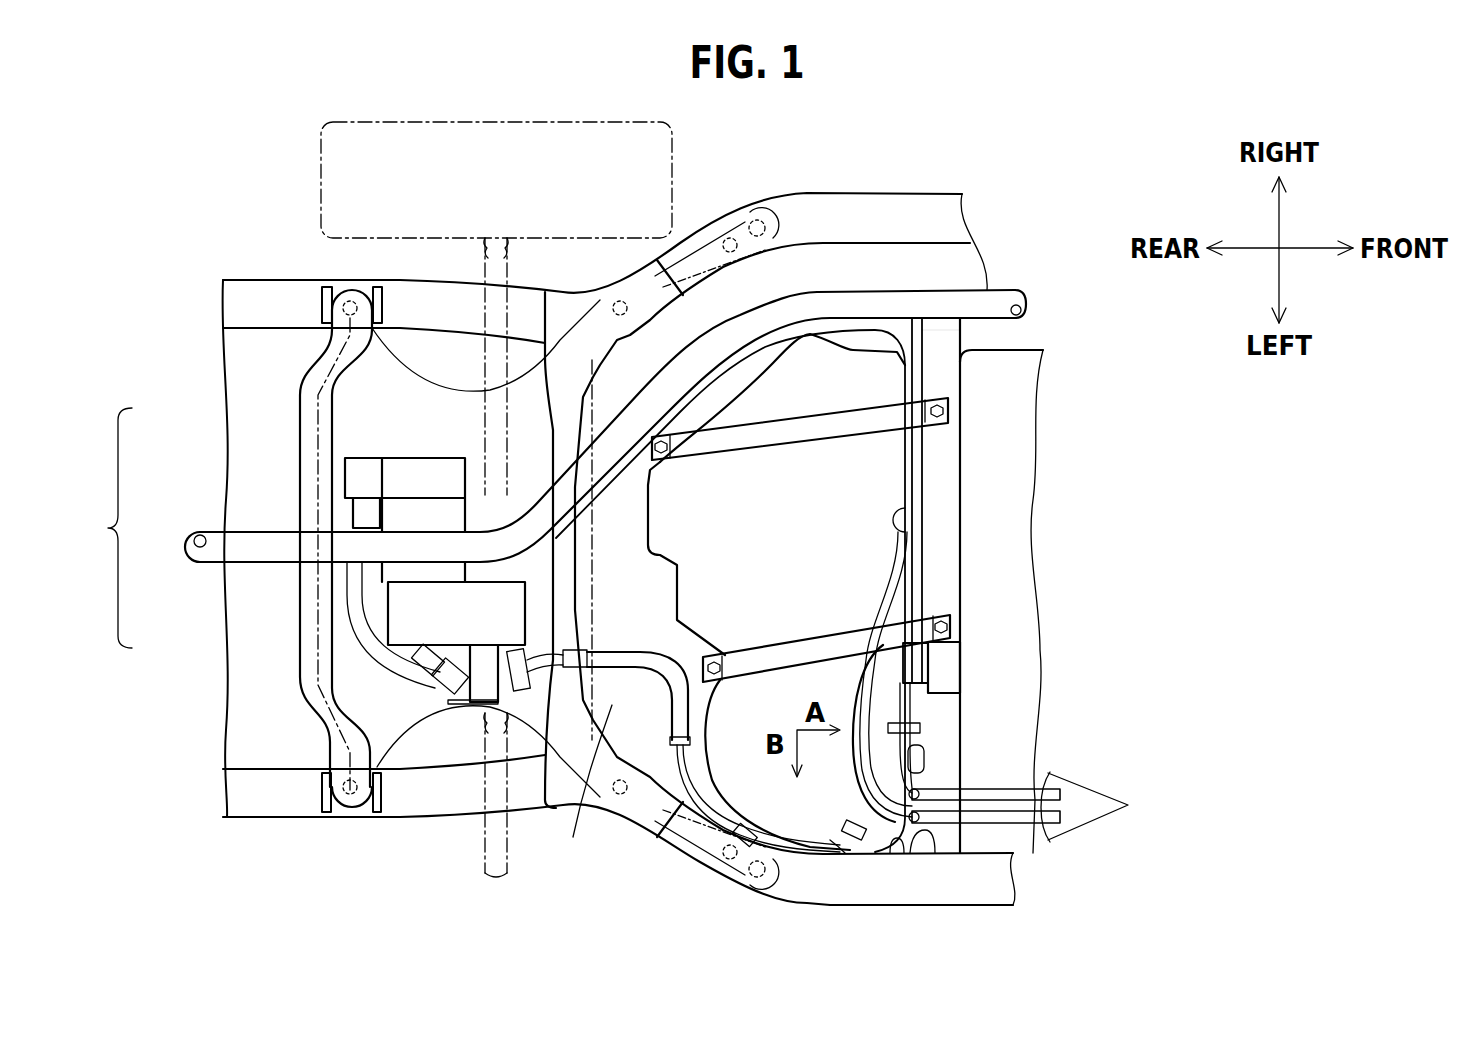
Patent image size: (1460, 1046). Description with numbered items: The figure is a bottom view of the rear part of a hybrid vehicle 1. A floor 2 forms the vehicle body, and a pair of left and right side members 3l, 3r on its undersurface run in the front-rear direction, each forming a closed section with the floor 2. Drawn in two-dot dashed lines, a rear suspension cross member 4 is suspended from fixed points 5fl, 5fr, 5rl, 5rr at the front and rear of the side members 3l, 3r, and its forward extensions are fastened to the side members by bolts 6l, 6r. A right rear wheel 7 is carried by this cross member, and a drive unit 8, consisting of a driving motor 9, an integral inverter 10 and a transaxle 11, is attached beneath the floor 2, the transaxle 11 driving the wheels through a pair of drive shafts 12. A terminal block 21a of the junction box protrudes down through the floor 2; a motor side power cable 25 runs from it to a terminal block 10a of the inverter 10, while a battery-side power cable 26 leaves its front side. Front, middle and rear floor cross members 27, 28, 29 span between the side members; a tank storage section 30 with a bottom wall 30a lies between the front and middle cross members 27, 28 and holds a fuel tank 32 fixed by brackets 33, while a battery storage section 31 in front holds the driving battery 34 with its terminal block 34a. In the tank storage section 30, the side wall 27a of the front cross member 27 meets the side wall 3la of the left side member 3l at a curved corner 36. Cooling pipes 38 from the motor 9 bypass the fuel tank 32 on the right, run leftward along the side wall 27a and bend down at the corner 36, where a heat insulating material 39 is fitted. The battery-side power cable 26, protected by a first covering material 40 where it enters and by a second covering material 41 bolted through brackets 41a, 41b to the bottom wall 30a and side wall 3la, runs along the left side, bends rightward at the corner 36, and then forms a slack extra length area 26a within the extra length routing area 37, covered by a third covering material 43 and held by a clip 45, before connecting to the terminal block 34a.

The hybrid vehicle 1 is at (968, 168).
The floor 2 is at (252, 746).
The right side member 3r is at (255, 300).
The left side member 3l is at (270, 810).
The side wall of the left side member 3la is at (835, 858).
The rear suspension cross member 4 is at (300, 642).
The rear right fixed point 5rr is at (350, 300).
The rear left fixed point 5rl is at (350, 800).
The front right fixed point 5fr is at (620, 300).
The front left fixed point 5fl is at (620, 796).
The right bolt 6r is at (730, 236).
The left bolt 6l is at (757, 878).
The rear wheel 7 is at (321, 178).
The drive unit 8 is at (106, 528).
The driving motor 9 is at (390, 518).
The inverter 10 is at (395, 462).
The terminal block of the inverter 10a is at (360, 480).
The transaxle 11 is at (410, 605).
The drive shaft 12 is at (487, 418).
The terminal block of the junction box 21a is at (462, 706).
The motor side power cable 25 is at (412, 666).
The battery-side power cable 26 is at (690, 768).
The extra length area 26a is at (918, 712).
The front floor cross member 27 is at (953, 470).
The side wall of the front floor cross member 27a is at (912, 520).
The middle floor cross member 28 is at (568, 580).
The rear floor cross member 29 is at (298, 686).
The tank storage section 30 is at (858, 338).
The bottom wall of the tank storage section 30a is at (585, 797).
The battery storage section 31 is at (996, 335).
The fuel tank 32 is at (812, 345).
The bracket 33 is at (815, 430).
The driving battery 34 is at (1025, 368).
The terminal block of the driving battery 34a is at (948, 658).
The corner 36 is at (934, 856).
The extra length routing area 37 is at (928, 750).
The cooling pipe 38 is at (1039, 807).
The heat insulating material 39 is at (897, 856).
The first covering material 40 is at (633, 666).
The second covering material 41 is at (792, 848).
The bracket 41a is at (747, 828).
The bracket 41b is at (851, 826).
The third covering material 43 is at (948, 664).
The clip 45 is at (895, 726).